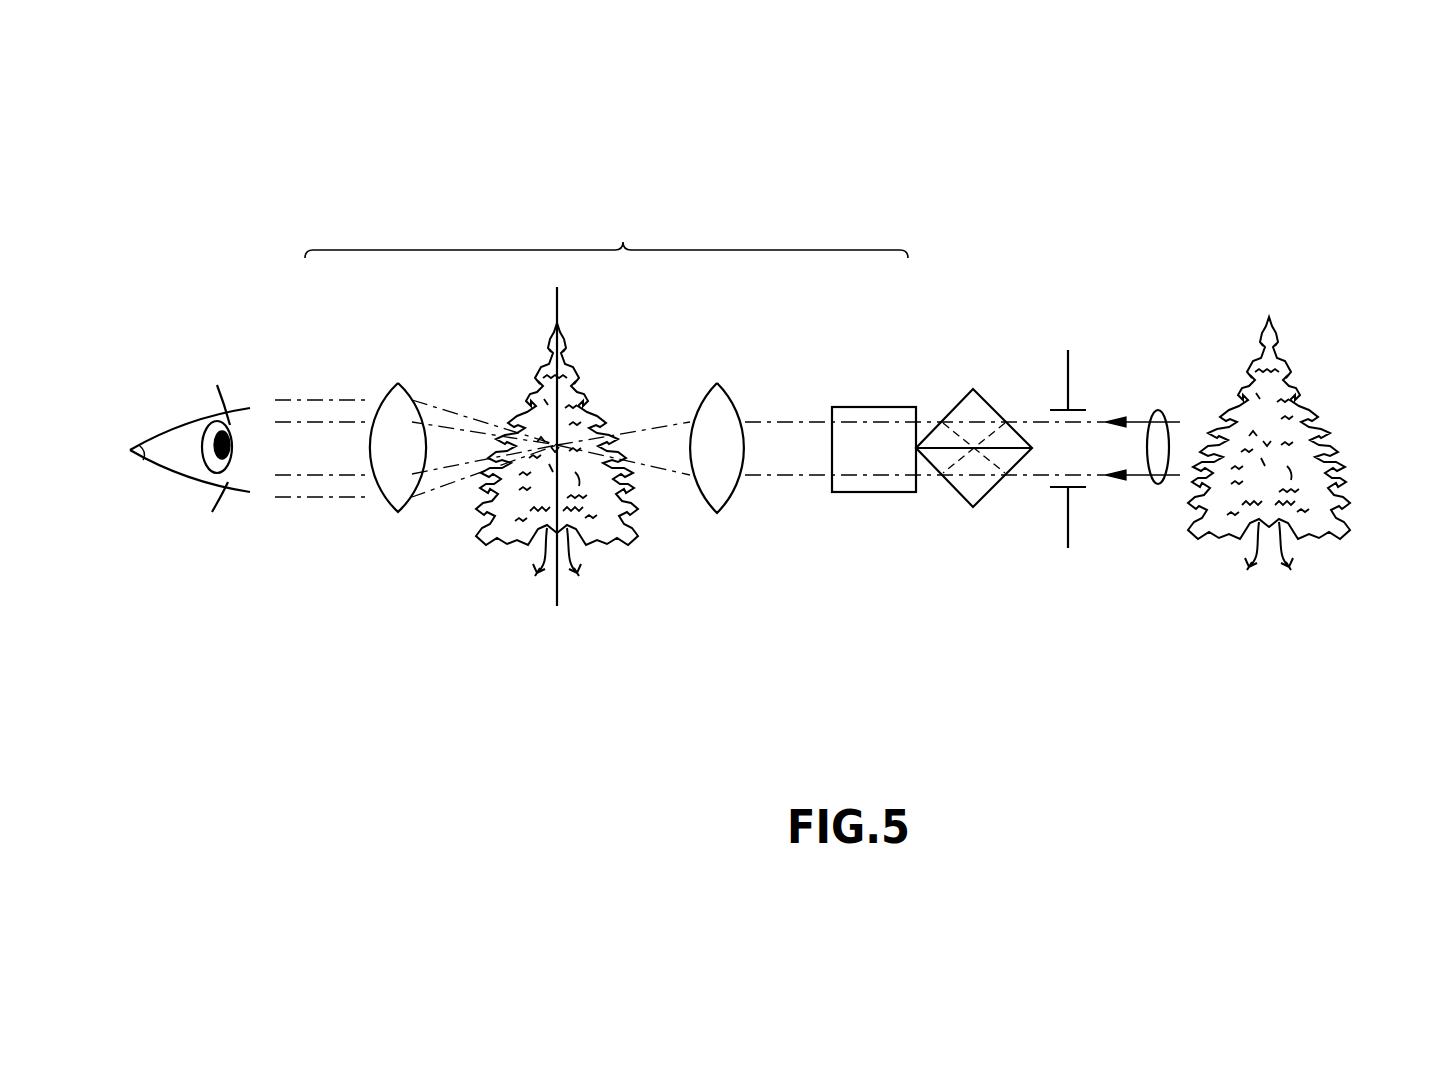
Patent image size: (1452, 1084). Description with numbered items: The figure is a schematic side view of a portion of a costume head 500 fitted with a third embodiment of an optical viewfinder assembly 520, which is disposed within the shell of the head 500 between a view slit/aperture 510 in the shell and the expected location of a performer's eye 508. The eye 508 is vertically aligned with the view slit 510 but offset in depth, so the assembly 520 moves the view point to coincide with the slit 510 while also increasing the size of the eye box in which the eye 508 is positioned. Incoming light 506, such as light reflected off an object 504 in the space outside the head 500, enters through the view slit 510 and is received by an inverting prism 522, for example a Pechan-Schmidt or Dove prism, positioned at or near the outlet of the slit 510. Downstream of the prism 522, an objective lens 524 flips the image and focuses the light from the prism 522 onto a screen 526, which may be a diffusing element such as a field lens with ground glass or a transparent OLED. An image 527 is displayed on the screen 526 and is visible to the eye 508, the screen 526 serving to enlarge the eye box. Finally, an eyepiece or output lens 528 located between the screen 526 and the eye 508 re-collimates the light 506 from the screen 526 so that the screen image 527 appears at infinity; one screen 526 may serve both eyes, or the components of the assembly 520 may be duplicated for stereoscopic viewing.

The costume head 500 is at (1314, 240).
The object 504 is at (1294, 443).
The incoming light 506 is at (1158, 415).
The performer's eye 508 is at (190, 477).
The view slit/aperture 510 is at (1105, 514).
The optical viewfinder assembly 520 is at (606, 227).
The inverting prism 522 is at (916, 407).
The objective lens 524 is at (734, 366).
The screen 526 is at (554, 652).
The image 527 is at (655, 574).
The eyepiece or output lens 528 is at (398, 366).